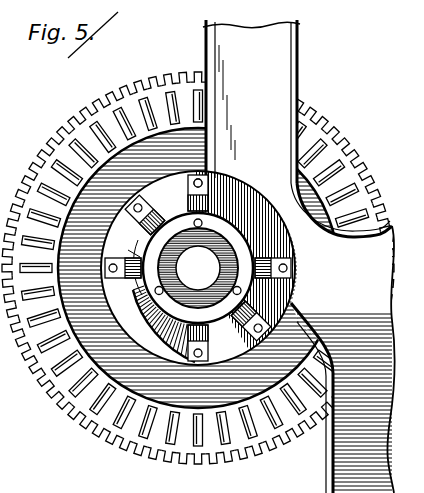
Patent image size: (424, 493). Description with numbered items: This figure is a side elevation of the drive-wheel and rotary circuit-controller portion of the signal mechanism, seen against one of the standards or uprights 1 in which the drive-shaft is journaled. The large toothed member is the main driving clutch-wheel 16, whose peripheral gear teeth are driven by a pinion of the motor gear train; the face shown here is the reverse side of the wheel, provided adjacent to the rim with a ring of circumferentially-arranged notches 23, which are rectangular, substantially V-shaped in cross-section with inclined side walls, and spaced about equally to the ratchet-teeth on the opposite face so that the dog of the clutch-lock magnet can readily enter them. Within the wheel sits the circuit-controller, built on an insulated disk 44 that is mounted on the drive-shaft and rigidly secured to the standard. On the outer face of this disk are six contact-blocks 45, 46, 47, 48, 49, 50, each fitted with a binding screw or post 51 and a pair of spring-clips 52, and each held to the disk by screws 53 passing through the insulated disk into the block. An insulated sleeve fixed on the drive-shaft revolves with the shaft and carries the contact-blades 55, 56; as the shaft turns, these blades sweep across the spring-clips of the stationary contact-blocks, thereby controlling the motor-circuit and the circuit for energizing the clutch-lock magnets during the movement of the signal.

The standards or uprights 1 is at (299, 255).
The main driving clutch-wheel 16 is at (96, 418).
The notches 23 is at (66, 380).
The insulated disk 44 is at (147, 303).
The contact-block 45 is at (120, 280).
The contact-block 46 is at (136, 203).
The contact-block 47 is at (210, 188).
The contact-block 48 is at (292, 270).
The contact-block 49 is at (247, 345).
The contact-block 50 is at (197, 362).
The binding screw or post 51 is at (107, 266).
The spring-clips 52 is at (212, 202).
The screws 53 is at (192, 180).
The contact-blade 55 is at (128, 250).
The contact-blade 56 is at (132, 289).